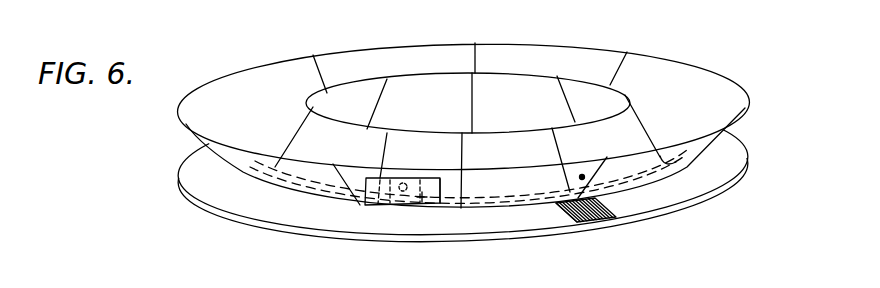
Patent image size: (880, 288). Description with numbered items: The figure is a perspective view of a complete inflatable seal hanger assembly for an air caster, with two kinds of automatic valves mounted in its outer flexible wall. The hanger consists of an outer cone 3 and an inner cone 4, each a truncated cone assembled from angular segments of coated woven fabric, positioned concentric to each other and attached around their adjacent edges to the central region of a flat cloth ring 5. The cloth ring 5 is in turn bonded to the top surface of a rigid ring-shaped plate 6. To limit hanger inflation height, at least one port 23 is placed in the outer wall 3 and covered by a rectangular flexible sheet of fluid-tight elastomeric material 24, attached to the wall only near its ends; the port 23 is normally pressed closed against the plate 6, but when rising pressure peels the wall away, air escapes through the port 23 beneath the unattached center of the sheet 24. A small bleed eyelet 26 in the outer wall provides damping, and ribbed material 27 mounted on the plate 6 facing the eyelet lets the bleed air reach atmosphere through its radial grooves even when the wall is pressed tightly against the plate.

The outer cone 3 is at (724, 70).
The inner cone 4 is at (581, 80).
The flat cloth ring 5 is at (740, 152).
The rigid ring-shaped plate 6 is at (716, 201).
The port 23 is at (407, 196).
The flexible sheet of fluid-tight elastomeric material 24 is at (441, 188).
The bleed eyelet 26 is at (585, 179).
The ribbed material 27 is at (578, 200).